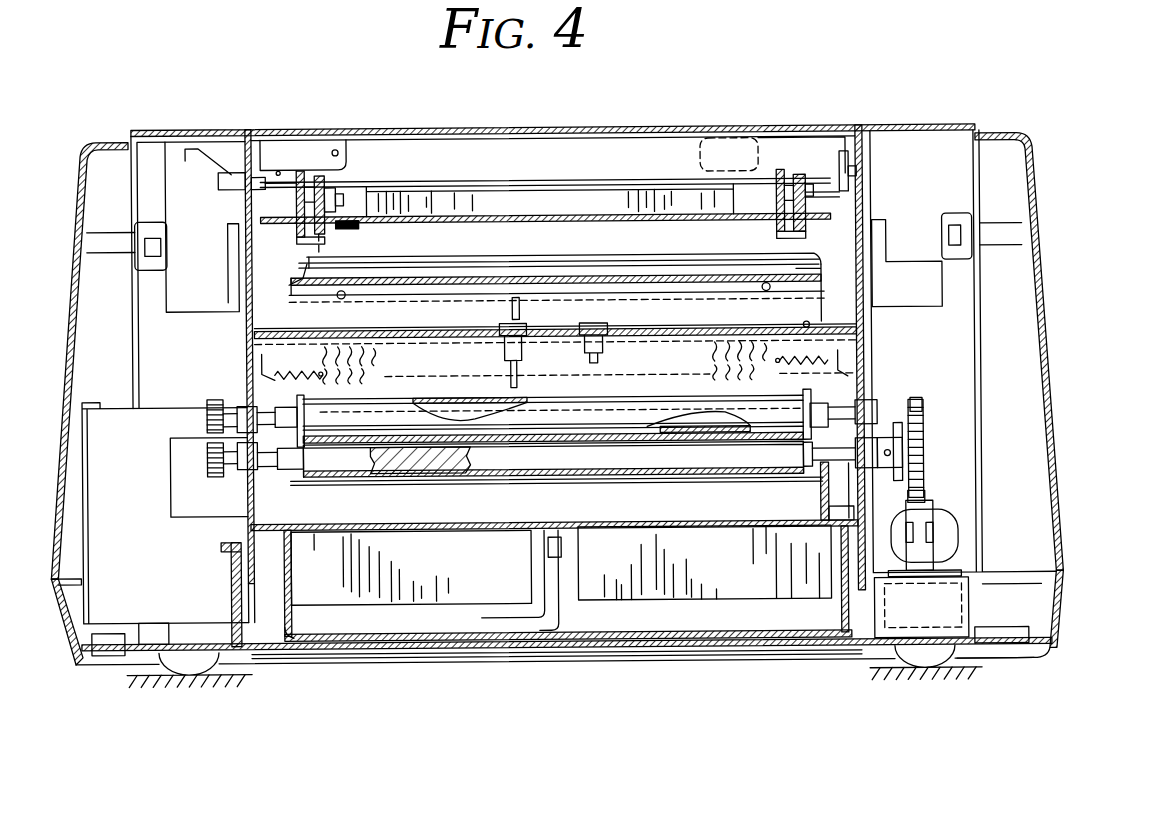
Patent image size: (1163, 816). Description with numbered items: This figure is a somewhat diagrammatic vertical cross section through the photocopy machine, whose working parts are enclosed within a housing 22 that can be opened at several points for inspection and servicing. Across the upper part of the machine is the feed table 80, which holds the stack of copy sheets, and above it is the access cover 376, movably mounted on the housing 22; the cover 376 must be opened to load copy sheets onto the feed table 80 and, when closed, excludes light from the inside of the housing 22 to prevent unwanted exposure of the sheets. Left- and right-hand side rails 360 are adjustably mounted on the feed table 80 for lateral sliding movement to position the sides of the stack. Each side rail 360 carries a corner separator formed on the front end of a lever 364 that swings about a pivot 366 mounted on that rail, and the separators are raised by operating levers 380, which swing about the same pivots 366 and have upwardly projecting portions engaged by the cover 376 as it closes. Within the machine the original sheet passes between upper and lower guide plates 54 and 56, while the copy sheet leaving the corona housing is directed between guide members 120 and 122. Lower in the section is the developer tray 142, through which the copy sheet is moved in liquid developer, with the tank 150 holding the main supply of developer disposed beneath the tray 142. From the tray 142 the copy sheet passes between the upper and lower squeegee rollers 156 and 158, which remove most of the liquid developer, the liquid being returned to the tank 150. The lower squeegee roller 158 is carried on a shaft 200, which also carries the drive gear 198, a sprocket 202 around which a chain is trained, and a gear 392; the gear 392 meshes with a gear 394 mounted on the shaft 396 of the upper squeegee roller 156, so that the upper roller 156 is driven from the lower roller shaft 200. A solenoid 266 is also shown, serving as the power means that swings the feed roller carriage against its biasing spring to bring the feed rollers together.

The housing 22 is at (213, 128).
The feed table 80 is at (450, 200).
The access cover 376 is at (553, 127).
The side rails 360 is at (322, 183).
The lever 364 is at (888, 206).
The pivot 366 is at (303, 225).
The operating levers 380 is at (297, 186).
The guide member 120 is at (668, 276).
The guide member 122 is at (686, 286).
The upper guide plate 54 is at (445, 338).
The lower guide plate 56 is at (398, 358).
The shaft 396 is at (268, 382).
The gear 394 is at (212, 400).
The gear 392 is at (218, 480).
The upper squeegee roller 156 is at (556, 418).
The lower squeegee roller 158 is at (556, 463).
The developer tray 142 is at (362, 522).
The tank 150 is at (408, 632).
The shaft 200 is at (818, 485).
The sprocket 202 is at (898, 425).
The gear 198 is at (920, 400).
The solenoid 266 is at (960, 530).